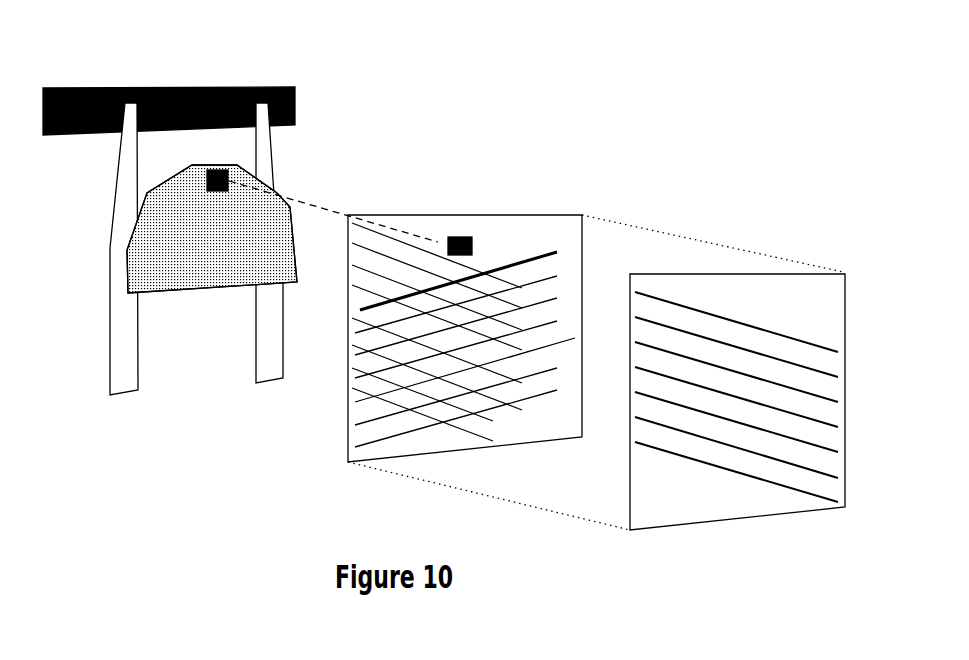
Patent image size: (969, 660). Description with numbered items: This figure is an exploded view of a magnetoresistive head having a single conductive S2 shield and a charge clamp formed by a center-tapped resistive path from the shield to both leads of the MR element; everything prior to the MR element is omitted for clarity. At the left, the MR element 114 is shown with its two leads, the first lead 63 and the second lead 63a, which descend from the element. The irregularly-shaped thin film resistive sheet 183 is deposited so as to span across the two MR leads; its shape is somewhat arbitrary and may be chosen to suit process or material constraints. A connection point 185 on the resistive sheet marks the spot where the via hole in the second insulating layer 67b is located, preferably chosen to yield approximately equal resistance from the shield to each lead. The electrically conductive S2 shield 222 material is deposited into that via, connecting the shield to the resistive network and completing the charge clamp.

The support bar 114 is at (145, 88).
The leg 63 is at (117, 358).
The leg 63a is at (270, 382).
The thin film resistive sheet 183 is at (215, 290).
The marker element 185 is at (477, 243).
The second insulating layer 67b is at (563, 225).
The S2 shield 222 is at (765, 285).